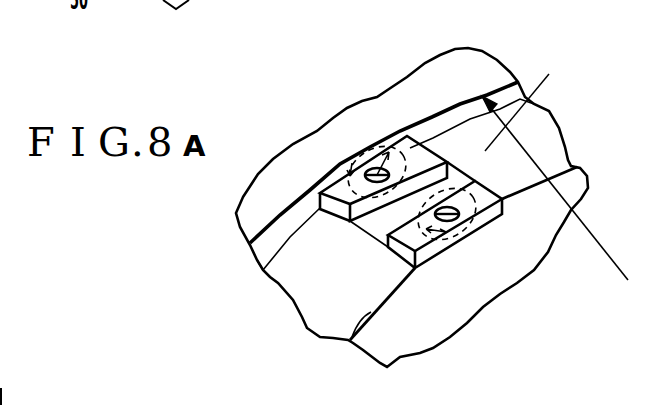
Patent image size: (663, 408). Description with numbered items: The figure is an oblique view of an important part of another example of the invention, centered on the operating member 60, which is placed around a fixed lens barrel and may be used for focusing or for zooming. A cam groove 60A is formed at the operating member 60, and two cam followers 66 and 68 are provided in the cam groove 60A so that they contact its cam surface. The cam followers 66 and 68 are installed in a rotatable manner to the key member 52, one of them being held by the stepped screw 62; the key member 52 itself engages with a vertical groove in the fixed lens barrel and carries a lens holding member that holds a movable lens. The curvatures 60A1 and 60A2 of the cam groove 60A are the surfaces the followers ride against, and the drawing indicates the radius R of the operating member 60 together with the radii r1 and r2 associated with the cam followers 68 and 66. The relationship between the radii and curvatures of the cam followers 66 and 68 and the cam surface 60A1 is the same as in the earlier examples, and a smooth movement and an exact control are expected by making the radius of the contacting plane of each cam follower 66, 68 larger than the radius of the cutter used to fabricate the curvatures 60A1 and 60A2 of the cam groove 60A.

The operating member 60 is at (463, 63).
The cam groove 60A is at (547, 155).
The cam surface curvature 60A1 is at (348, 340).
The cam surface curvature 60A2 is at (267, 245).
The cam follower 68 is at (440, 152).
The cam follower 66 is at (468, 190).
The key member 52 is at (524, 96).
The radius of curvature R is at (583, 222).
The first hole radius r1 is at (376, 172).
The second hole radius r2 is at (446, 225).
The stepped screw 62 is at (77, 394).